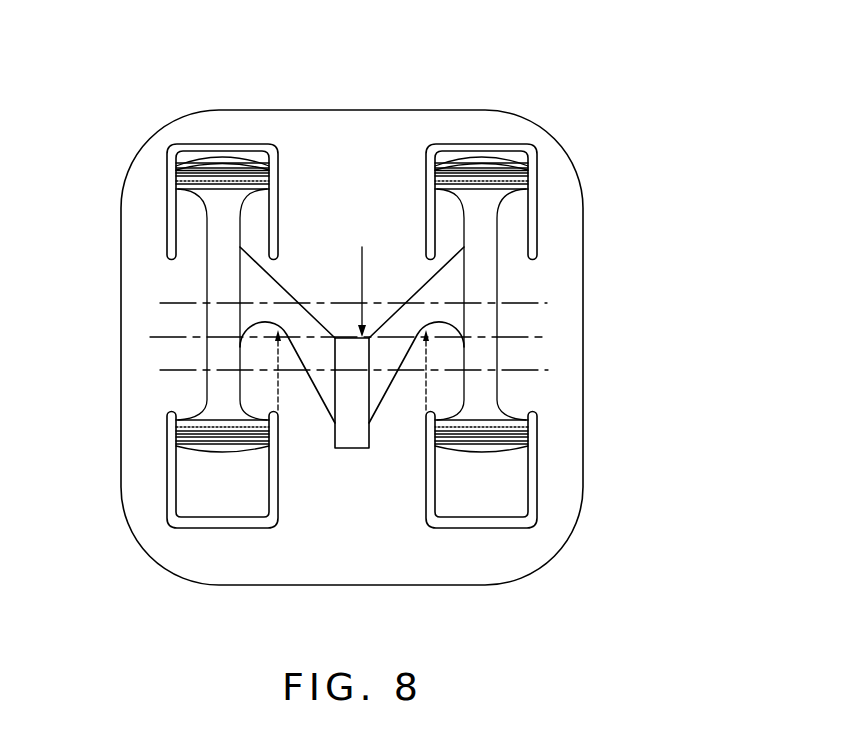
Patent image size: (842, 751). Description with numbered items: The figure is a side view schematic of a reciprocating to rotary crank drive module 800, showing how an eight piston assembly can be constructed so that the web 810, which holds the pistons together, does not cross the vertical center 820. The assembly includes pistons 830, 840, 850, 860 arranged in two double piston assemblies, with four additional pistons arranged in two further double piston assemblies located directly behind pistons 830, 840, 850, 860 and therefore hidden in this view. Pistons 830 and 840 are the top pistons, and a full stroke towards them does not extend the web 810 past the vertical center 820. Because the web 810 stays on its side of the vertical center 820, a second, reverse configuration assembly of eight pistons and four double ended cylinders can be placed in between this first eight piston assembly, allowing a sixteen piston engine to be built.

The reciprocating to rotary crank drive module 800 is at (540, 64).
The web 810 is at (388, 431).
The vertical center 820 is at (580, 330).
The piston 830 is at (167, 160).
The piston 840 is at (532, 151).
The piston 850 is at (538, 517).
The piston 860 is at (165, 513).